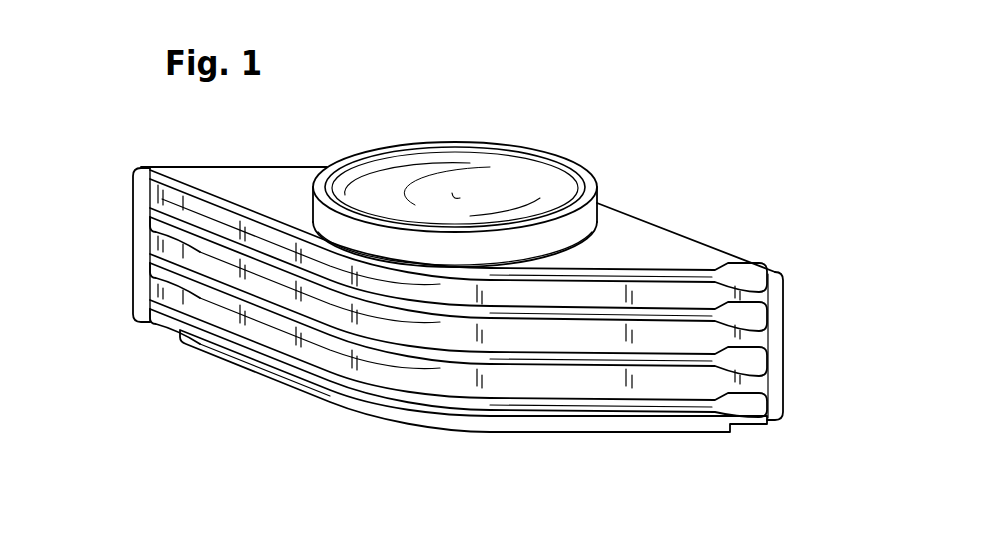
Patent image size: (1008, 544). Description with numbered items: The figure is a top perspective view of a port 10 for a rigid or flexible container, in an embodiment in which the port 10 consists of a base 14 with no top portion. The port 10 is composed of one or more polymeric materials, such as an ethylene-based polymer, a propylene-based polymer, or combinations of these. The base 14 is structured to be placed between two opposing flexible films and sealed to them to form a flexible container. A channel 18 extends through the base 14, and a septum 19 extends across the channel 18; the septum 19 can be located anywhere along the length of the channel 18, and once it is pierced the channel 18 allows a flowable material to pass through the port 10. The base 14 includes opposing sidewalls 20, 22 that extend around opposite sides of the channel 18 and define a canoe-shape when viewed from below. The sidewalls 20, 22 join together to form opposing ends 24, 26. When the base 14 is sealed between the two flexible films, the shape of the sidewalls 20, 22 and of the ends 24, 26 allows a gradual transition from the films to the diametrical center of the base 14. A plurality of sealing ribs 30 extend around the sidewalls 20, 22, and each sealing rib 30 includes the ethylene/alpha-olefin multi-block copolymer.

The port 10 is at (692, 104).
The base 14 is at (673, 217).
The channel 18 is at (523, 176).
The septum 19 is at (415, 170).
The sidewall 20 is at (240, 205).
The sidewall 22 is at (257, 167).
The end 24 is at (121, 228).
The end 26 is at (801, 341).
The sealing rib 30 is at (480, 272).